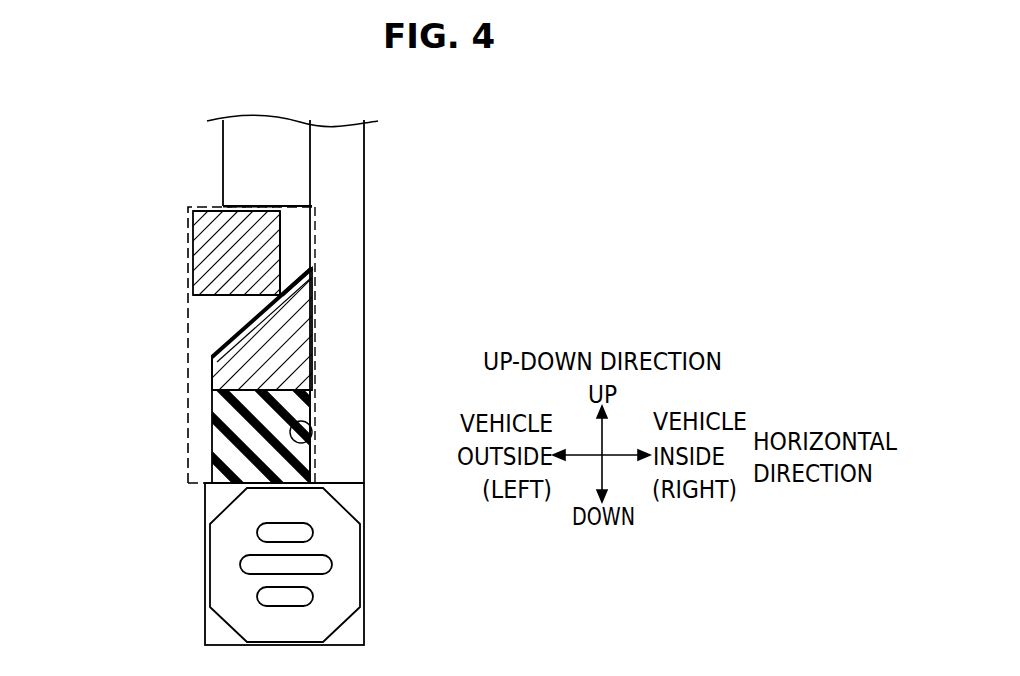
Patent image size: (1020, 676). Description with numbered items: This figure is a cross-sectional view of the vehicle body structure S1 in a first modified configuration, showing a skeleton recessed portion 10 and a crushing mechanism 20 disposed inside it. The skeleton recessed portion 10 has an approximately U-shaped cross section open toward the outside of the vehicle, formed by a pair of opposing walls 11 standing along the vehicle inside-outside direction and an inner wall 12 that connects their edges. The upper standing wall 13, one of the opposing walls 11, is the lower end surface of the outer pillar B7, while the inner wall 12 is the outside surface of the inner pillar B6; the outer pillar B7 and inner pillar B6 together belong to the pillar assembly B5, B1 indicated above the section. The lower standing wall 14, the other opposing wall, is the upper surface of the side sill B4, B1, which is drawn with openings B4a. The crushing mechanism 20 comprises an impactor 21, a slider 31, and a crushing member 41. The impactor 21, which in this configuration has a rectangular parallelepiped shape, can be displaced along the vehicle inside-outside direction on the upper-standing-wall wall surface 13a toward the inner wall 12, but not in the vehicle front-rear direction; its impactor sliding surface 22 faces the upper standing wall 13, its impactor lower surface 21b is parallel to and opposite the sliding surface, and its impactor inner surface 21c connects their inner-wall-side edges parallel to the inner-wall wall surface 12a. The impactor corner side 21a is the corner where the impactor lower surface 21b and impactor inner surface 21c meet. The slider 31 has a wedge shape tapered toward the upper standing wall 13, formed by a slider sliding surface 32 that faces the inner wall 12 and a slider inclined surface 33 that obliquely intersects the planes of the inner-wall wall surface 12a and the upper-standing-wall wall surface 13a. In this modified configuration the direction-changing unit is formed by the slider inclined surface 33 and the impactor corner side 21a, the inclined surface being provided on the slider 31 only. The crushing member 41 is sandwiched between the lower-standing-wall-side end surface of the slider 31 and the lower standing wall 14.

The vehicle body structure S1 is at (134, 99).
The skeleton recessed portion 10 is at (280, 354).
The opposing walls 11 is at (258, 354).
The inner wall 12 is at (315, 260).
The inner-wall wall surface 12a is at (312, 436).
The upper standing wall 13 is at (315, 222).
The upper-standing-wall wall surface 13a is at (222, 218).
The lower standing wall 14 is at (256, 484).
The crushing mechanism 20 is at (187, 359).
The impactor 21 is at (220, 268).
The impactor corner side 21a is at (282, 296).
The impactor lower surface 21b is at (238, 297).
The impactor inner surface 21c is at (312, 258).
The impactor sliding surface 22 is at (250, 205).
The slider 31 is at (290, 372).
The slider sliding surface 32 is at (245, 365).
The slider inclined surface 33 is at (300, 289).
The crushing member 41 is at (218, 443).
The battery unit B1 is at (342, 336).
The side sill B4 is at (367, 509).
The frame openings B4a is at (342, 557).
The battery side member B5 is at (363, 80).
The inner pillar B6 is at (337, 140).
The outer pillar B7 is at (263, 140).